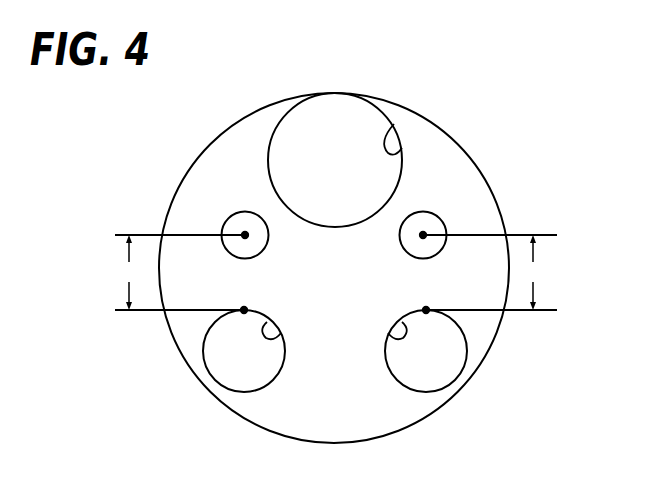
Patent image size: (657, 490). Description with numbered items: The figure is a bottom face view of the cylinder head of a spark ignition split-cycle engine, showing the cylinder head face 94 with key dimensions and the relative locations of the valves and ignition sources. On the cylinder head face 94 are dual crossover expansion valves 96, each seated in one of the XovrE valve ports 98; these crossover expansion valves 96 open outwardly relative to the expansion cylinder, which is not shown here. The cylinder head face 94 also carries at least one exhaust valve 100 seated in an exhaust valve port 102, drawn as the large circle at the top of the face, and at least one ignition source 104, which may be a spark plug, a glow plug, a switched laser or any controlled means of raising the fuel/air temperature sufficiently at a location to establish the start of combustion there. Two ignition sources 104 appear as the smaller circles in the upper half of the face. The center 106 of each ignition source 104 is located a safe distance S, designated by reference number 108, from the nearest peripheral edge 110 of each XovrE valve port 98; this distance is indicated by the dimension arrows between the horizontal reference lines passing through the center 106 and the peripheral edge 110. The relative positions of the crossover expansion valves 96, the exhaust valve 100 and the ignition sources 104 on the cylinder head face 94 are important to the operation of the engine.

The cylinder head face 94 is at (302, 417).
The crossover expansion valves 96 is at (238, 378).
The XovrE valve ports 98 is at (390, 337).
The exhaust valve 100 is at (362, 123).
The exhaust valve port 102 is at (398, 150).
The ignition source 104 is at (230, 225).
The center of ignition source 106 is at (245, 235).
The safe distance S 108 is at (122, 265).
The peripheral edge of XovrE valve port 110 is at (244, 310).